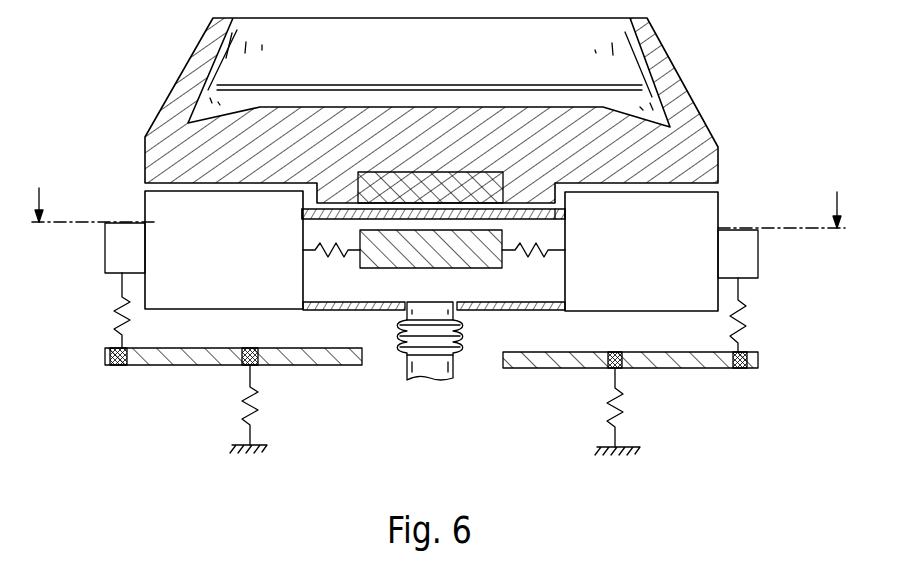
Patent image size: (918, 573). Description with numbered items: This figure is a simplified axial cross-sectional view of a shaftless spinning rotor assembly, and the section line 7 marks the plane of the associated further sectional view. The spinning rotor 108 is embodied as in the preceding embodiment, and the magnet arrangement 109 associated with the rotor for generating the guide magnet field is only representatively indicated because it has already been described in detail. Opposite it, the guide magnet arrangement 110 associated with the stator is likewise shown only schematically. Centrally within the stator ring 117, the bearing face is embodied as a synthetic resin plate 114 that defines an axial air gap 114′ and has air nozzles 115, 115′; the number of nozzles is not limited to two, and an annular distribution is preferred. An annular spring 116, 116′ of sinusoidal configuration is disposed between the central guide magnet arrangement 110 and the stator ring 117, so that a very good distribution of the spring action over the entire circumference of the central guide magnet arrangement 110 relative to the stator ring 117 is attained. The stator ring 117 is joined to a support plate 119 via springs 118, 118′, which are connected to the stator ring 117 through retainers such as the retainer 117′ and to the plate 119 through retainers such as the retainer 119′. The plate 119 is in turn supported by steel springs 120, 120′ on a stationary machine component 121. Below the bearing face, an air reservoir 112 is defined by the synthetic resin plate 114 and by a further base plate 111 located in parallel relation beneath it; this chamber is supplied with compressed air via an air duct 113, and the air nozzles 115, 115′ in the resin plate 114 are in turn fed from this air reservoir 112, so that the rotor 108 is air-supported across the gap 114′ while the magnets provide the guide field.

The section line 7- 7 is at (438, 188).
The spinning rotor 108 is at (697, 68).
The magnet arrangement 109 is at (455, 172).
The guide magnet arrangement 110 is at (473, 257).
The base plate 111 is at (360, 310).
The air reservoir 112 is at (518, 285).
The air duct 113 is at (413, 350).
The synthetic resin plate 114 is at (535, 220).
The axial air gap 114′ is at (566, 196).
The air nozzle 115 is at (315, 220).
The air nozzle 115′ is at (540, 207).
The annular spring 116 is at (548, 255).
The annular spring 116′ is at (317, 252).
The stator ring 117 is at (157, 207).
The retainer 117′ is at (118, 250).
The spring 118 is at (745, 313).
The spring 118′ is at (112, 302).
The support plate 119 is at (155, 365).
The retainer 119′ is at (115, 367).
The steel spring 120 is at (622, 423).
The steel spring 120′ is at (243, 387).
The stationary machine component 121 is at (232, 457).